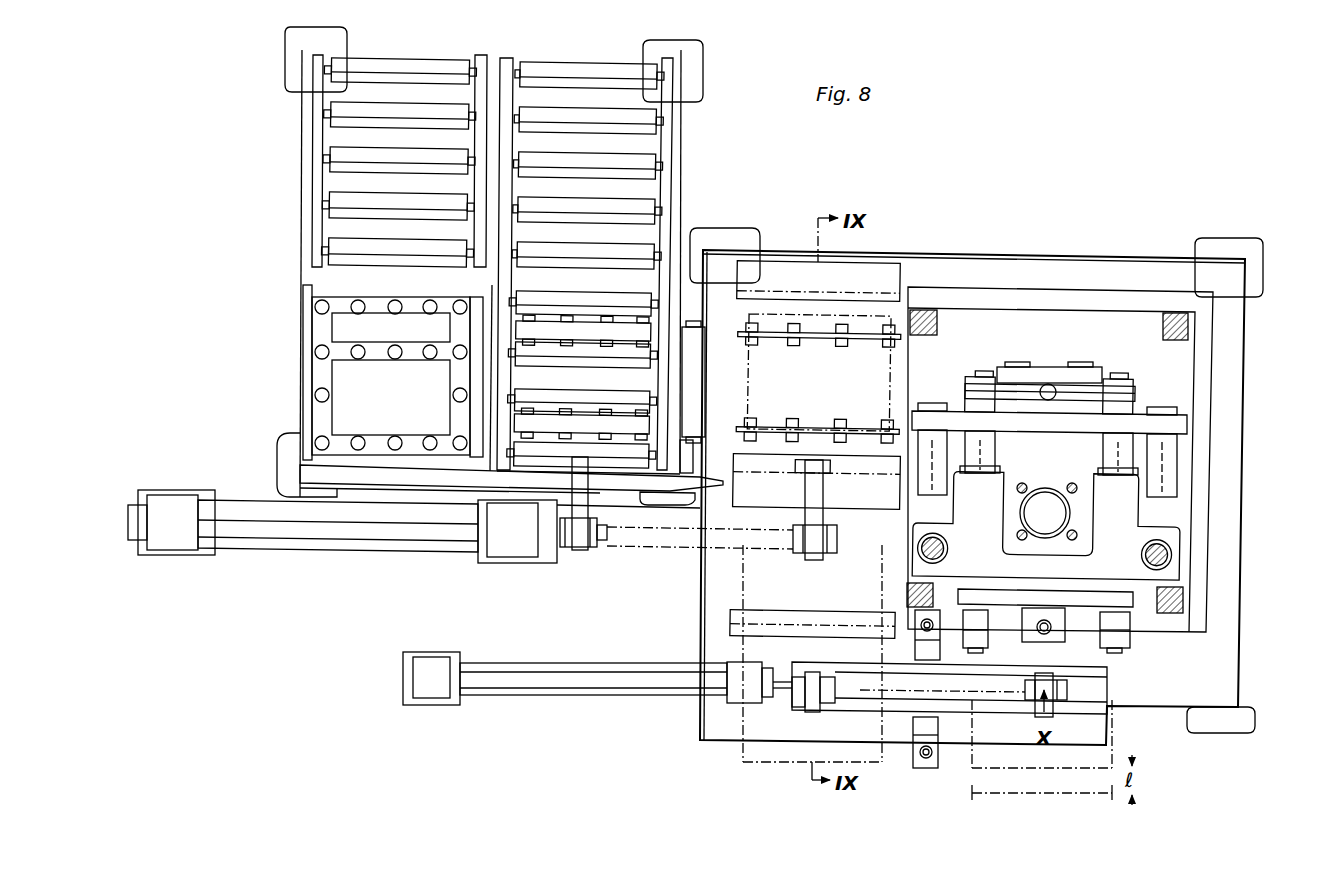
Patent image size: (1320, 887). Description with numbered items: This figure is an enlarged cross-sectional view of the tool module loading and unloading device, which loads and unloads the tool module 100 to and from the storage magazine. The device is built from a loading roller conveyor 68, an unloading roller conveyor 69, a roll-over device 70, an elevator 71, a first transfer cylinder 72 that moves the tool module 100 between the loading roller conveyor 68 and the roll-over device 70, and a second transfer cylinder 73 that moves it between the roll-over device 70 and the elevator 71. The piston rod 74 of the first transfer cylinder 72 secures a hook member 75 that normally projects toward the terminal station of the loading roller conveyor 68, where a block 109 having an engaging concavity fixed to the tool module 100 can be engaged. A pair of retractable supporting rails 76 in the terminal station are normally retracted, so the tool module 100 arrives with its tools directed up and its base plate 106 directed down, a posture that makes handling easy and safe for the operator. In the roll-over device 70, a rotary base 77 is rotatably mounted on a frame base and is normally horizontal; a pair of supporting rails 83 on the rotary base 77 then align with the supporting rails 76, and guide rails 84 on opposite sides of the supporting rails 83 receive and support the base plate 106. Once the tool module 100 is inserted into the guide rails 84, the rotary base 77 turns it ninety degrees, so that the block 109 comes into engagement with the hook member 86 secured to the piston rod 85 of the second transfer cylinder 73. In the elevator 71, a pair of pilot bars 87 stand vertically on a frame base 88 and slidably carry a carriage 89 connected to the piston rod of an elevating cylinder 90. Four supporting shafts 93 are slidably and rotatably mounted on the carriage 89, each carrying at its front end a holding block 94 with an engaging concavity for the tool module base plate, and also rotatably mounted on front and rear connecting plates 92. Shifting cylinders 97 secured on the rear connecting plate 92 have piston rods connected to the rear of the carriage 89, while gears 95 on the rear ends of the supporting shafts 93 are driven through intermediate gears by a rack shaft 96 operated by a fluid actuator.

The loading roller conveyor 68 is at (680, 225).
The unloading roller conveyor 69 is at (305, 220).
The roll-over device 70 is at (885, 280).
The elevator 71 is at (1200, 415).
The first transfer cylinder 72 is at (350, 533).
The second transfer cylinder 73 is at (612, 690).
The piston rod 74 is at (545, 545).
The hook member 75 is at (585, 500).
The retractable supporting rails 76 is at (520, 350).
The rotary base 77 is at (822, 400).
The supporting rails 83 is at (830, 336).
The guide rails 84 is at (790, 270).
The piston rod 85 is at (783, 690).
The hook member 86 is at (800, 640).
The pilot bars 87 is at (880, 565).
The frame base 88 is at (1172, 318).
The carriage 89 is at (1135, 590).
The elevating cylinder 90 is at (1068, 513).
The connecting plates 92 is at (935, 420).
The supporting shafts 93 is at (985, 448).
The holding block 94 is at (972, 632).
The gears 95 is at (978, 380).
The rack shaft 96 is at (1048, 380).
The shifting cylinders 97 is at (930, 455).
The tool module 100 is at (595, 300).
The base plate 106 is at (505, 335).
The block 109 is at (572, 468).